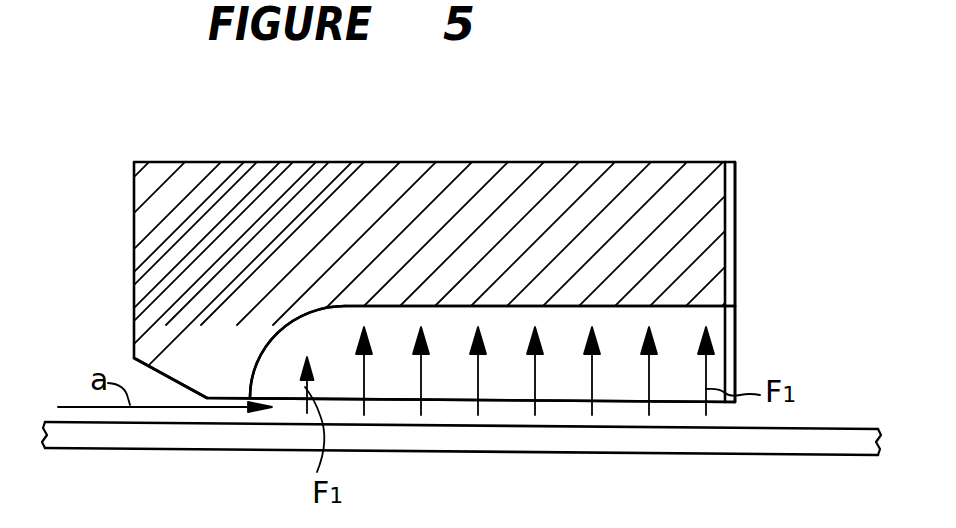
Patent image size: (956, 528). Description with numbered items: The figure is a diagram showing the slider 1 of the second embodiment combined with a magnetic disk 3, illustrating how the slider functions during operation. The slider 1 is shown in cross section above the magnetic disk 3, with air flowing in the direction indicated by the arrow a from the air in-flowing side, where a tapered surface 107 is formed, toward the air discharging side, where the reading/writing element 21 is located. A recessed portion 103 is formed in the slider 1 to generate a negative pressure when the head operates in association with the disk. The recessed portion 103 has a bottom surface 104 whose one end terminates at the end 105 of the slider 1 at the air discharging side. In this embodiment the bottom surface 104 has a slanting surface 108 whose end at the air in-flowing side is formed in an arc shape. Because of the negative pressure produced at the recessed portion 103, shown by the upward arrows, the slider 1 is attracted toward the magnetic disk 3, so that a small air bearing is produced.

The slider 1 is at (410, 235).
The magnetic disk 3 is at (513, 437).
The reading/writing element 21 is at (735, 236).
The recessed portion 103 is at (674, 331).
The bottom surface 104 is at (539, 306).
The end of the slider 105 is at (735, 360).
The tapered surface 107 is at (138, 364).
The slanting surface 108 is at (284, 325).